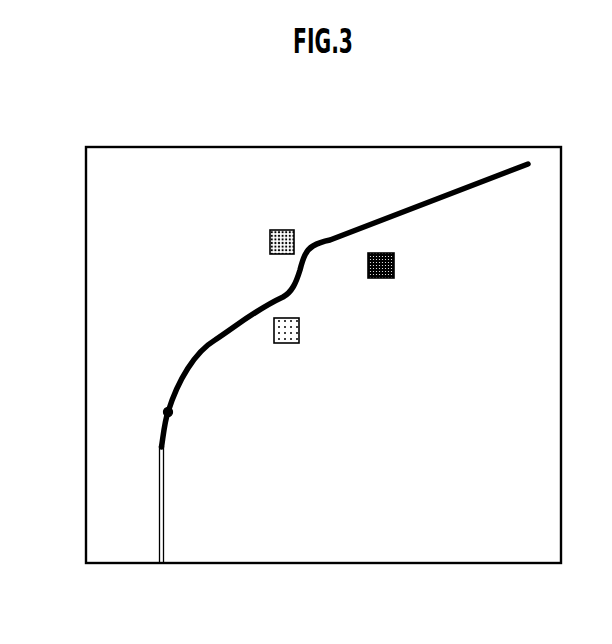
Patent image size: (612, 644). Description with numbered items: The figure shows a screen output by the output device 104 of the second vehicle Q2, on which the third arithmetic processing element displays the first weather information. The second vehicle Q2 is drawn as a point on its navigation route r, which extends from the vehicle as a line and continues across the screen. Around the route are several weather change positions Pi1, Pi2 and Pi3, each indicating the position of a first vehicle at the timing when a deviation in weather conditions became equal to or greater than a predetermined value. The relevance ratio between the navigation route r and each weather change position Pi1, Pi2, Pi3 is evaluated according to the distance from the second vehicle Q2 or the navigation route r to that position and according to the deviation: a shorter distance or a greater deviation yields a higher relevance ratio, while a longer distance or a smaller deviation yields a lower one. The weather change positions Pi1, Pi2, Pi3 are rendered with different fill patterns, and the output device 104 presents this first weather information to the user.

The luminance-color distribution region 104 is at (530, 147).
The pixel region 1 Pi1 is at (285, 229).
The pixel region 2 Pi2 is at (387, 252).
The pixel region 3 Pi3 is at (294, 317).
The point Q2 is at (166, 411).
The distance r is at (163, 540).